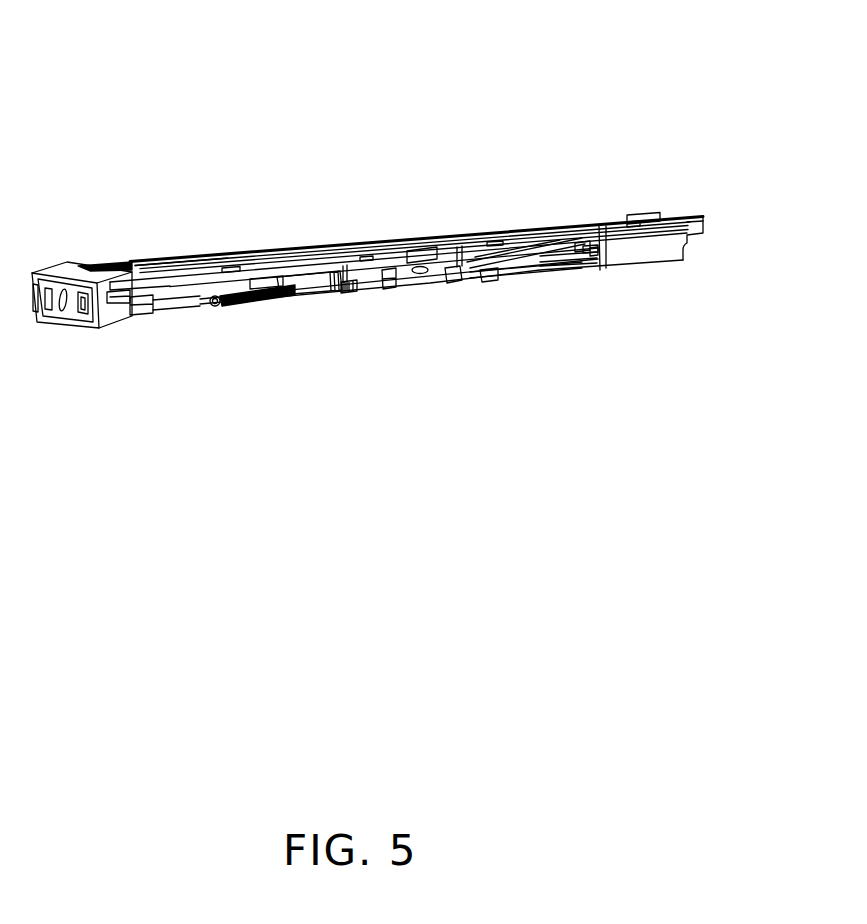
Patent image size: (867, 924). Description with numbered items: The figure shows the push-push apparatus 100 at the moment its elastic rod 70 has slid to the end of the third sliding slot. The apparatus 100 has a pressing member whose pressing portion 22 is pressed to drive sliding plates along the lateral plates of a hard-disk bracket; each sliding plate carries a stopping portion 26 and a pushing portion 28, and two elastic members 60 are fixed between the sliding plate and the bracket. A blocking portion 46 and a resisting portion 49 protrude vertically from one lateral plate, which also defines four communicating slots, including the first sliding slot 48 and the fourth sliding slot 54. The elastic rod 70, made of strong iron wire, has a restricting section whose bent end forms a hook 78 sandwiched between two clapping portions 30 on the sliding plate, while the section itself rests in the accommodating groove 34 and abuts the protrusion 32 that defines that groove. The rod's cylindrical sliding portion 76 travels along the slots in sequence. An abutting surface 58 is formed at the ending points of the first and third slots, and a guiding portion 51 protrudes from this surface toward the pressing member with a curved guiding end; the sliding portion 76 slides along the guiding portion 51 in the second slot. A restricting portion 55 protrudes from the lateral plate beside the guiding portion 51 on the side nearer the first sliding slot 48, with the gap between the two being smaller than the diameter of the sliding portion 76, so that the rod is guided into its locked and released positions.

The push-push apparatus 100 is at (342, 83).
The pressing portion 22 is at (73, 315).
The stopping portion 26 is at (422, 252).
The pushing portion 28 is at (446, 284).
The clapping portions 30 is at (333, 296).
The protrusion 32 is at (393, 288).
The accommodating groove 34 is at (378, 284).
The blocking portion 46 is at (282, 258).
The first sliding slot 48 is at (530, 242).
The resisting portion 49 is at (473, 282).
The guiding portion 51 is at (590, 247).
The fourth sliding slot 54 is at (551, 268).
The restricting portion 55 is at (578, 247).
The abutting surface 58 is at (598, 250).
The elastic member 60 is at (228, 262).
The elastic rod 70 is at (489, 280).
The sliding portion 76 is at (603, 268).
The hook 78 is at (343, 279).